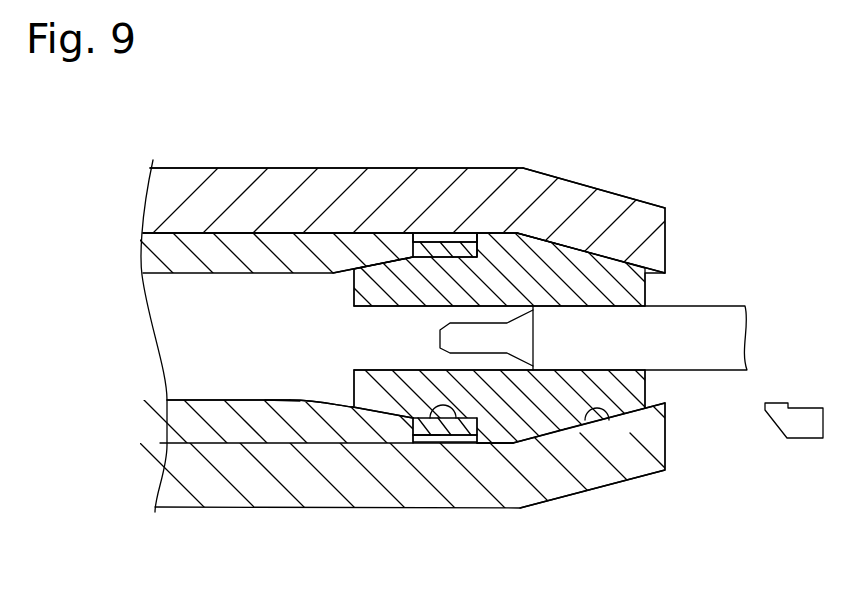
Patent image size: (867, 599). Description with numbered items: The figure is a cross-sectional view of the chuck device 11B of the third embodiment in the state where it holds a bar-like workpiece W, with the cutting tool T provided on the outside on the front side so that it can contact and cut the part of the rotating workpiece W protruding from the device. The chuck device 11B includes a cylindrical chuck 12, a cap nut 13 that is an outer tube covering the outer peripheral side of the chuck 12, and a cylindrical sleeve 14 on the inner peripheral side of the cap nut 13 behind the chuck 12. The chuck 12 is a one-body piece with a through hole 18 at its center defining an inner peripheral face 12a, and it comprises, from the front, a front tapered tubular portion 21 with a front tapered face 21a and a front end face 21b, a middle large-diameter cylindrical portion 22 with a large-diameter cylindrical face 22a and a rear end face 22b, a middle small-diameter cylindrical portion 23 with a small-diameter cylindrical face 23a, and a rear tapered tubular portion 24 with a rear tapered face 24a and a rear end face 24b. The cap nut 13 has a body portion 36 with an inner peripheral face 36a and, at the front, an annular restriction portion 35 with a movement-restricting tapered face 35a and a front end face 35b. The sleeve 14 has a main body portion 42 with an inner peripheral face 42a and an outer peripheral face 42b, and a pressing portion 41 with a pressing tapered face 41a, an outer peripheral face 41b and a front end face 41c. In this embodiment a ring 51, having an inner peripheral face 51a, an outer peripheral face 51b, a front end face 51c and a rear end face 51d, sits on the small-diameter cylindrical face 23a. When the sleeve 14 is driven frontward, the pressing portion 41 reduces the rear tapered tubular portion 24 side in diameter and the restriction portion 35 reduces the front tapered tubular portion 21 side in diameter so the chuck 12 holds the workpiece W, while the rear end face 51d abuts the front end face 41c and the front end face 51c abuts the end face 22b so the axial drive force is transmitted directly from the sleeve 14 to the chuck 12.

The chuck device 11B is at (662, 180).
The chuck 12 is at (549, 228).
The inner peripheral face 12a is at (353, 330).
The cap nut 13 is at (592, 174).
The sleeve 14 is at (245, 220).
The through hole 18 is at (455, 317).
The front tapered tubular portion 21 is at (593, 280).
The front tapered face 21a is at (598, 412).
The front end face 21b is at (647, 388).
The middle large-diameter cylindrical portion 22 is at (492, 245).
The large-diameter cylindrical face 22a is at (535, 423).
The end face 22b is at (487, 443).
The middle small-diameter cylindrical portion 23 is at (427, 247).
The small-diameter cylindrical face 23a is at (455, 430).
The rear tapered tubular portion 24 is at (362, 265).
The rear tapered face 24a is at (375, 412).
The rear end face 24b is at (270, 400).
The restriction portion 35 is at (661, 232).
The movement-restricting tapered face 35a is at (618, 465).
The front end face 35b is at (667, 448).
The body portion 36 is at (270, 203).
The inner peripheral face 36a is at (231, 443).
The pressing portion 41 is at (387, 245).
The pressing tapered face 41a is at (353, 357).
The outer peripheral face 41b is at (305, 403).
The front end face 41c is at (430, 428).
The main body portion 42 is at (190, 253).
The inner peripheral face 42a is at (190, 400).
The outer peripheral face 42b is at (208, 443).
The ring 51 is at (420, 247).
The inner peripheral face 51a is at (465, 442).
The outer peripheral face 51b is at (413, 443).
The front end face 51c is at (497, 440).
The rear end face 51d is at (395, 440).
The workpiece W is at (697, 323).
The cutting tool T is at (807, 426).